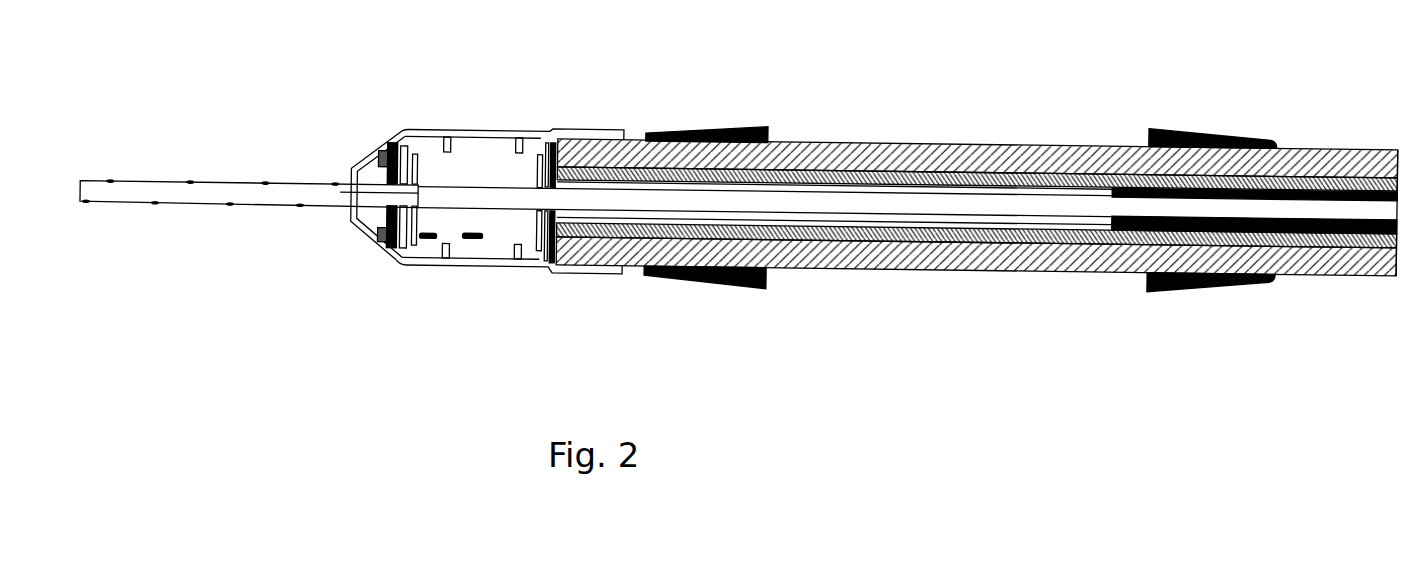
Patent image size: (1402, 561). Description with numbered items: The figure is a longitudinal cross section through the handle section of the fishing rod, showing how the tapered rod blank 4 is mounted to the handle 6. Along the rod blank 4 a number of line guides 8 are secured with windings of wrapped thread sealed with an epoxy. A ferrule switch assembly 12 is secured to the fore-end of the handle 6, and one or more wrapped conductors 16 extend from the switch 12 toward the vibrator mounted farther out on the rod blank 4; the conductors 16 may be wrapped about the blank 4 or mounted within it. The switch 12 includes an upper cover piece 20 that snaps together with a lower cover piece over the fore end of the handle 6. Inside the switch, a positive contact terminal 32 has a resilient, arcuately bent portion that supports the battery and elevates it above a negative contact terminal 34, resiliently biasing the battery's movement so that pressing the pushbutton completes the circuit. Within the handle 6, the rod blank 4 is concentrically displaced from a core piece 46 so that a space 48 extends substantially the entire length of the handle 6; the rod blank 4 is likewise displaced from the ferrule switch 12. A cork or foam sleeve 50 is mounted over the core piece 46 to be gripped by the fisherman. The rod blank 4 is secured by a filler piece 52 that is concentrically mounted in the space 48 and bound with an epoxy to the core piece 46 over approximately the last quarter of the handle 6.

The rod blank 4 is at (902, 212).
The handle 6 is at (877, 140).
The line guides 8 is at (722, 127).
The ferrule switch assembly 12 is at (508, 132).
The wrapped conductors 16 is at (193, 182).
The upper cover piece 20 is at (375, 135).
The positive contact terminal 32 is at (430, 243).
The negative contact terminal 34 is at (478, 240).
The core piece 46 is at (1020, 178).
The space 48 is at (943, 188).
The cork or foam sleeve 50 is at (1283, 147).
The filler piece 52 is at (1143, 235).